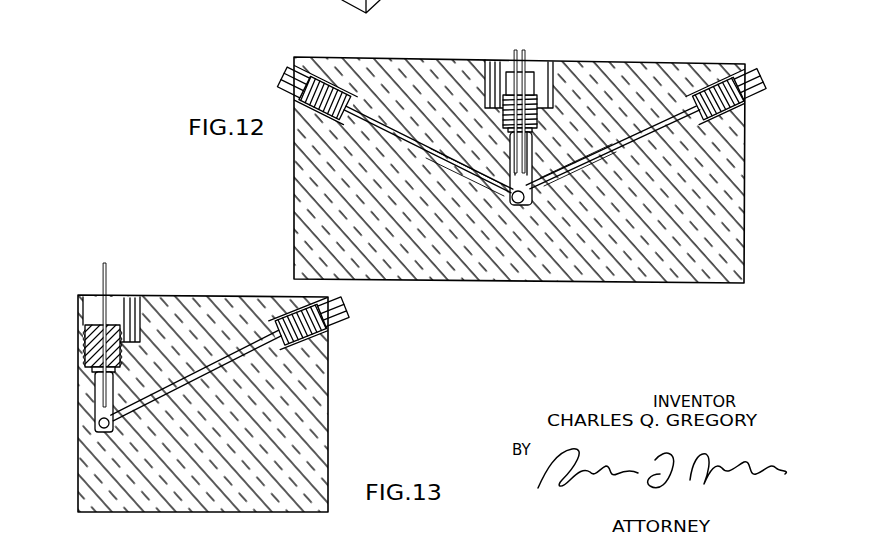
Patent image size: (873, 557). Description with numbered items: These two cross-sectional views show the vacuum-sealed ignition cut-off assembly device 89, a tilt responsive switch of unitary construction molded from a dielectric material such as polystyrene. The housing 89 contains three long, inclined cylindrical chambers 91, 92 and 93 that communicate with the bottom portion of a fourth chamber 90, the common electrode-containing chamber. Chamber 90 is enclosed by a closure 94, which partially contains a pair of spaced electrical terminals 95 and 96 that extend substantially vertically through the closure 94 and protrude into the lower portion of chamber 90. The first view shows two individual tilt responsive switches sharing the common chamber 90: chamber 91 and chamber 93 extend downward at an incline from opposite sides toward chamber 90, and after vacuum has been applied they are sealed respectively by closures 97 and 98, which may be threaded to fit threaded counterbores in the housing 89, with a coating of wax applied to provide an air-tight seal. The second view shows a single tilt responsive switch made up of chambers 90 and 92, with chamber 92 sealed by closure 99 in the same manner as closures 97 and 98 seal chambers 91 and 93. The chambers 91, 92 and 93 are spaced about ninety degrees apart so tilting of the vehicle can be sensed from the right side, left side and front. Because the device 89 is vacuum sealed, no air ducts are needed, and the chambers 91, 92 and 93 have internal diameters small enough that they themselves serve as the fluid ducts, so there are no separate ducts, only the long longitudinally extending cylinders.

In FIG. 12, the ignition cut-off assembly device 89 is at (614, 62).
In FIG. 13, the ignition cut-off assembly device 89 is at (329, 431).
In FIG. 12, the fourth chamber 90 is at (527, 203).
In FIG. 13, the fourth chamber 90 is at (96, 386).
In FIG. 12, the inclined chamber 91 is at (390, 128).
In FIG. 13, the inclined chamber 92 is at (220, 371).
In FIG. 12, the inclined chamber 93 is at (648, 133).
In FIG. 12, the closure 94 is at (532, 83).
In FIG. 12, the electrical terminal 95 is at (515, 50).
In FIG. 13, the electrical terminal 95 is at (104, 265).
In FIG. 12, the electrical terminal 96 is at (525, 50).
In FIG. 12, the closure 97 is at (288, 78).
In FIG. 12, the closure 98 is at (751, 75).
In FIG. 13, the closure 99 is at (345, 320).